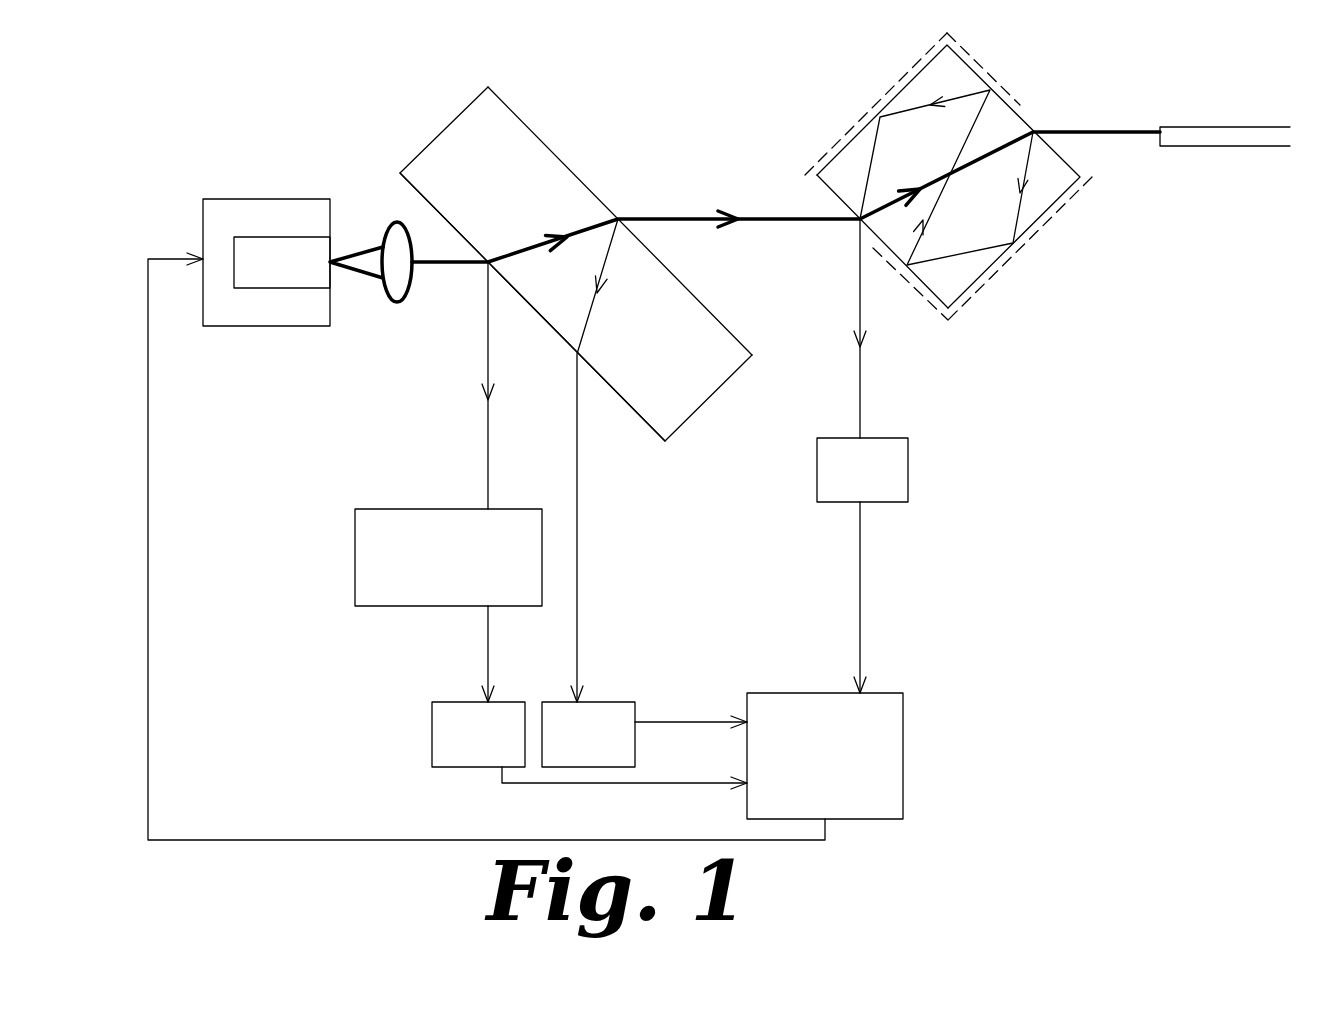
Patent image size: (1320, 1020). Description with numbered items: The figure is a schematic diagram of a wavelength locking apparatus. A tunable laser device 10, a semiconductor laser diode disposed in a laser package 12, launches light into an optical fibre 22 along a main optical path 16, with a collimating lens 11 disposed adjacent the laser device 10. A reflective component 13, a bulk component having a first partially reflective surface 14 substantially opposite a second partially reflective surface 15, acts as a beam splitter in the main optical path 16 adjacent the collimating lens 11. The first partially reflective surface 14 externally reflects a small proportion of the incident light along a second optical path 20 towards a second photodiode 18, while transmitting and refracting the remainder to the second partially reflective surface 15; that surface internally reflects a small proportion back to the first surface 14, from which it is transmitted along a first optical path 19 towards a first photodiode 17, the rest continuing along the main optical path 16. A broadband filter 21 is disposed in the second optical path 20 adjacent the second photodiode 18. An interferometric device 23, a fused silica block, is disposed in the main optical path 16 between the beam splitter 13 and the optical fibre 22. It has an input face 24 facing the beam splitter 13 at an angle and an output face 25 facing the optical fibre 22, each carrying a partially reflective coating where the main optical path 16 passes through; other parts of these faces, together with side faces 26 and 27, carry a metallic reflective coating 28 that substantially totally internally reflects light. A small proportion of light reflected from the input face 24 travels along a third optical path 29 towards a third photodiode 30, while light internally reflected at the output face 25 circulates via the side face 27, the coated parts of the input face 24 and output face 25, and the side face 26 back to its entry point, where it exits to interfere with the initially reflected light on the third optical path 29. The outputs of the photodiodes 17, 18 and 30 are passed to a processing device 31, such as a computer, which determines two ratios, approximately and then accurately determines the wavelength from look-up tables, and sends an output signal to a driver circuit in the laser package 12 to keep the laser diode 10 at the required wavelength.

The tunable laser device 10 is at (272, 288).
The collimating lens 11 is at (400, 303).
The laser package 12 is at (272, 199).
The reflective component 13 is at (702, 407).
The first partially reflective surface 14 is at (642, 423).
The second partially reflective surface 15 is at (707, 307).
The main optical path 16 is at (447, 262).
The first photodiode 17 is at (635, 748).
The second photodiode 18 is at (432, 745).
The first optical path 19 is at (577, 585).
The second optical path 20 is at (488, 447).
The filter 21 is at (355, 552).
The optical fibre 22 is at (1232, 146).
The interferometric device 23 is at (908, 145).
The input face 24 is at (920, 292).
The output face 25 is at (1023, 120).
The side face 26 is at (835, 153).
The side face 27 is at (1053, 213).
The metallic reflective coating 28 is at (997, 278).
The third optical path 29 is at (860, 386).
The third photodiode 30 is at (817, 475).
The processing device 31 is at (903, 748).